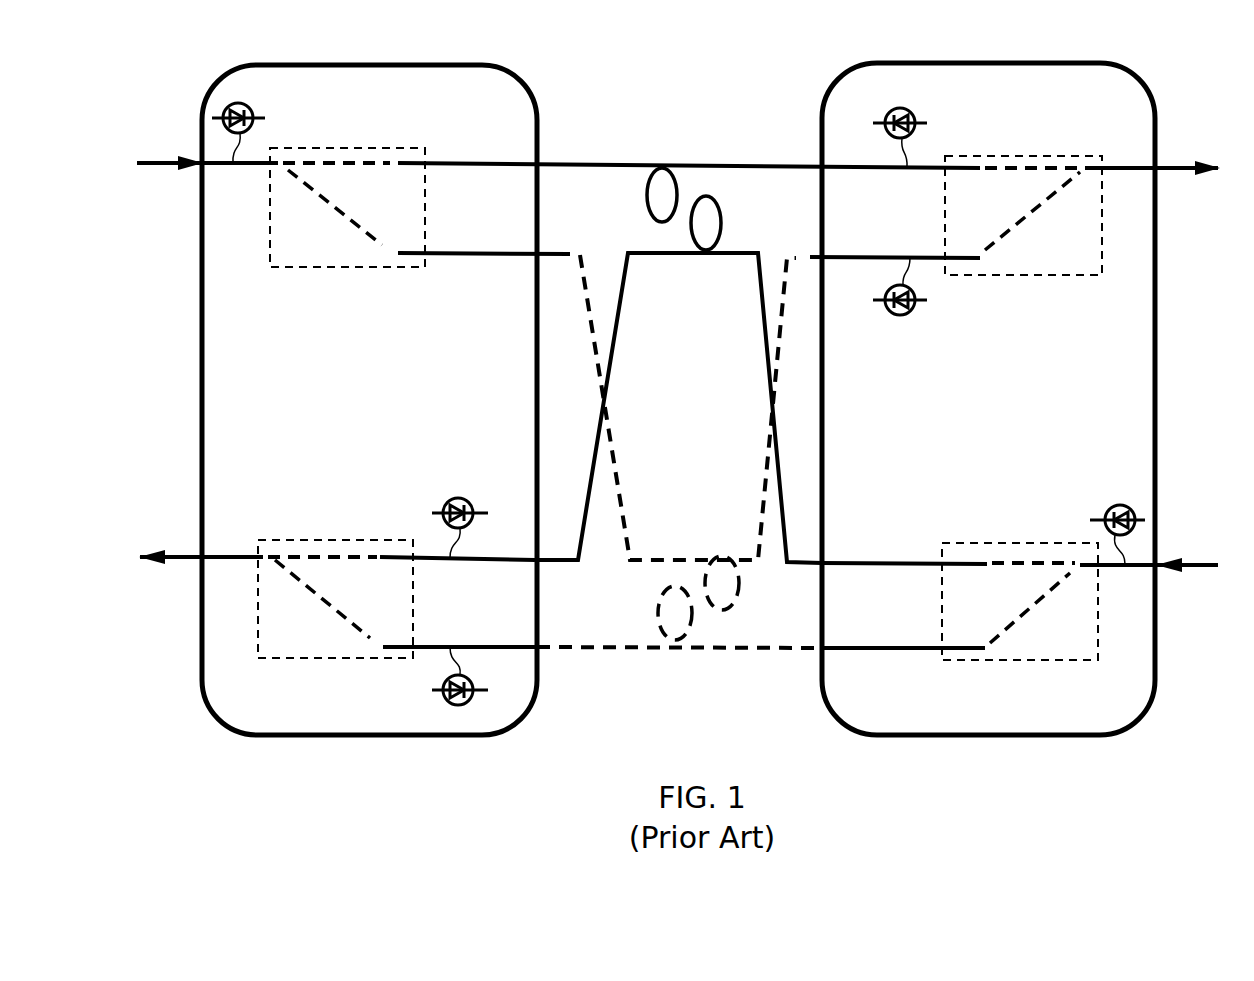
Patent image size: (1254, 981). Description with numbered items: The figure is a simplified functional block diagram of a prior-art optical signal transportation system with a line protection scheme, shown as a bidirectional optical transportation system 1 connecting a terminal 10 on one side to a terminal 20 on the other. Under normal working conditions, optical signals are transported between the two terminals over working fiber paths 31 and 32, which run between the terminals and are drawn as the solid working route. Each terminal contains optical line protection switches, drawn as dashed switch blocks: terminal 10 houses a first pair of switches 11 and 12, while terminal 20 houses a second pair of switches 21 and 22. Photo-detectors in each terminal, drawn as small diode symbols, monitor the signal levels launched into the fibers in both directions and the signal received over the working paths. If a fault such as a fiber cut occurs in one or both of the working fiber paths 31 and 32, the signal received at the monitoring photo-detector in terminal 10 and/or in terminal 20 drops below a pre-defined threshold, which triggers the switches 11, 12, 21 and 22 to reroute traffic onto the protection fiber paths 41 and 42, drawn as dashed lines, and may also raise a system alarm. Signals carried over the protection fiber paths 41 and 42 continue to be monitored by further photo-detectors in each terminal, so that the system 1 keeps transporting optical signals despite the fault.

The bidirectional optical transportation system 1 is at (728, 56).
The terminal 10 is at (395, 737).
The first optical switch SW1 11 is at (335, 268).
The second optical switch SW2 12 is at (345, 540).
The terminal 20 is at (915, 737).
The third optical switch SW3 21 is at (985, 543).
The fourth optical switch SW4 22 is at (1003, 277).
The working fiber path 31 is at (598, 165).
The working fiber path 32 is at (742, 253).
The protection fiber path 41 is at (750, 563).
The protection fiber path 42 is at (559, 650).